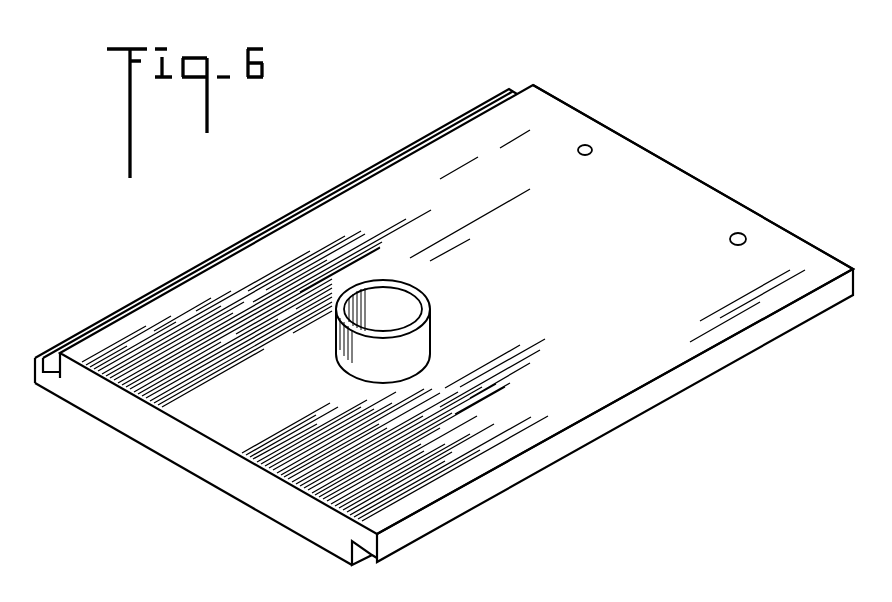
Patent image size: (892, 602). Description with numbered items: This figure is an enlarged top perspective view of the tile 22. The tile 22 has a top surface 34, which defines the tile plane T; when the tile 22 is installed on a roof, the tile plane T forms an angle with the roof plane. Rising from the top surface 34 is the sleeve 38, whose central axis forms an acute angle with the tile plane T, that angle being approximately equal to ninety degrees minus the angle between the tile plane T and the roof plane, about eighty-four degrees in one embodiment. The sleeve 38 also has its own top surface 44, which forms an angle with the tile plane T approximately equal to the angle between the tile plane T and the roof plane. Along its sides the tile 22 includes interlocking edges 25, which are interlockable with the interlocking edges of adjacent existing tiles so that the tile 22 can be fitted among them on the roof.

The tile 22 is at (682, 84).
The tile plane T is at (653, 200).
The top surface 34 is at (495, 279).
The interlocking edges 25 is at (340, 560).
The sleeve 38 is at (423, 347).
The top surface 44 is at (396, 283).